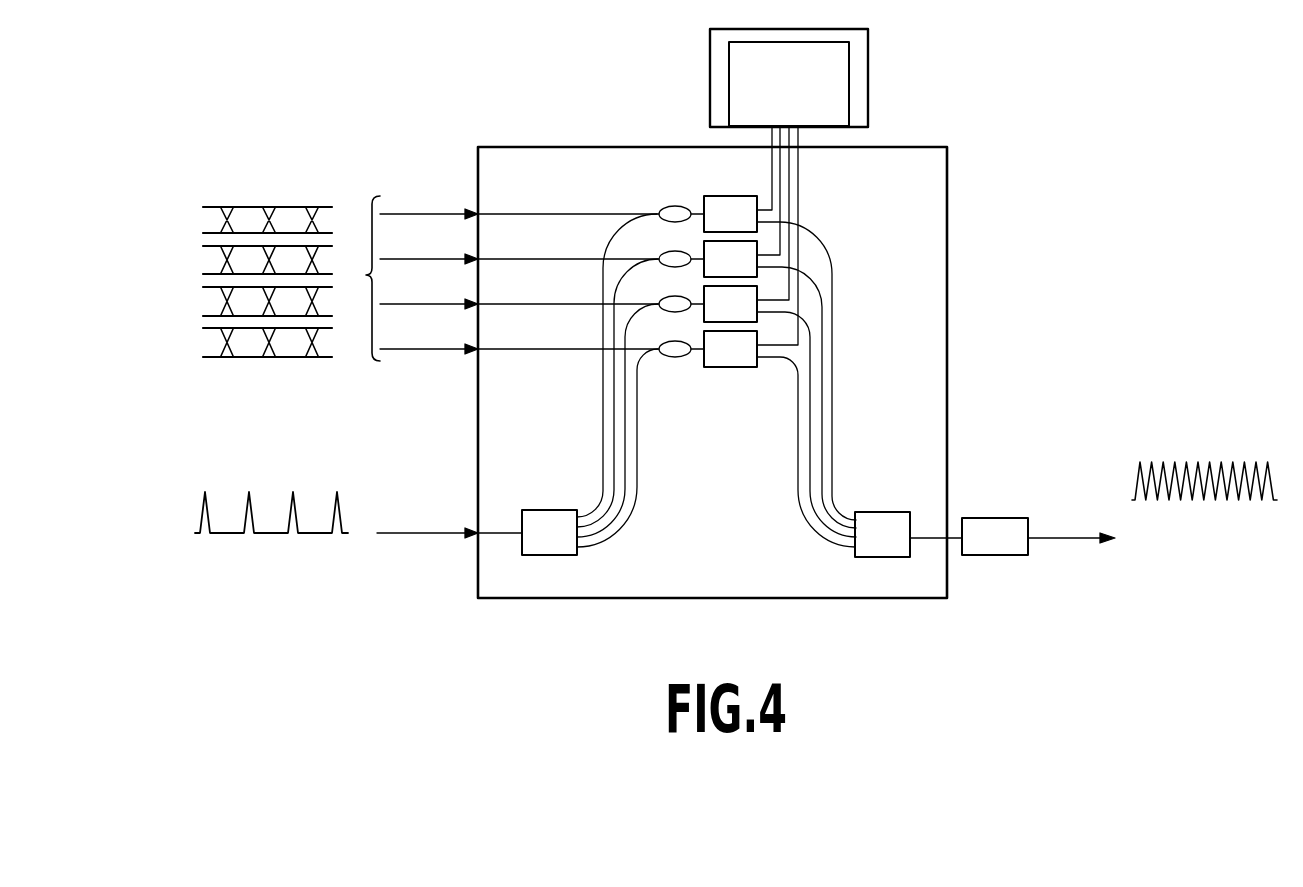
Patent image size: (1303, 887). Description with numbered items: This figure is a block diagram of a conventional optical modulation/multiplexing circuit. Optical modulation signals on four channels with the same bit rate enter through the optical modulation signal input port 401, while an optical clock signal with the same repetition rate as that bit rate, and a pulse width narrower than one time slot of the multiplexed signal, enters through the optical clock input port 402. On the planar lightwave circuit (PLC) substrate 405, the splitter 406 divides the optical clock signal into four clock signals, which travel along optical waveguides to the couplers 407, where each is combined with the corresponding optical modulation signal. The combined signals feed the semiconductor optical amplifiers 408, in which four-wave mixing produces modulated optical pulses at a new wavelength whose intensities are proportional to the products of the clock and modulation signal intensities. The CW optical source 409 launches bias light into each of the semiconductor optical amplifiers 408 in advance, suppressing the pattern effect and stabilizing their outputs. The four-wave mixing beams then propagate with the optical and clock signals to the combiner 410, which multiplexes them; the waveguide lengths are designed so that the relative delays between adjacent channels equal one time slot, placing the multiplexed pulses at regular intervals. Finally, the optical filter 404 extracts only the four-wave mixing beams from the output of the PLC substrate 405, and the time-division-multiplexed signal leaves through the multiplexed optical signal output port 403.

The optical modulation signal input port 401 is at (366, 275).
The optical clock input port 402 is at (418, 533).
The multiplexed optical signal output port 403 is at (1070, 537).
The optical filter 404 is at (995, 518).
The planar lightwave circuit (PLC) substrate 405 is at (948, 221).
The splitter 406 is at (548, 510).
The couplers 407 is at (668, 207).
The semiconductor optical amplifiers 408 is at (728, 196).
The CW optical source 409 is at (849, 82).
The combiner 410 is at (880, 512).